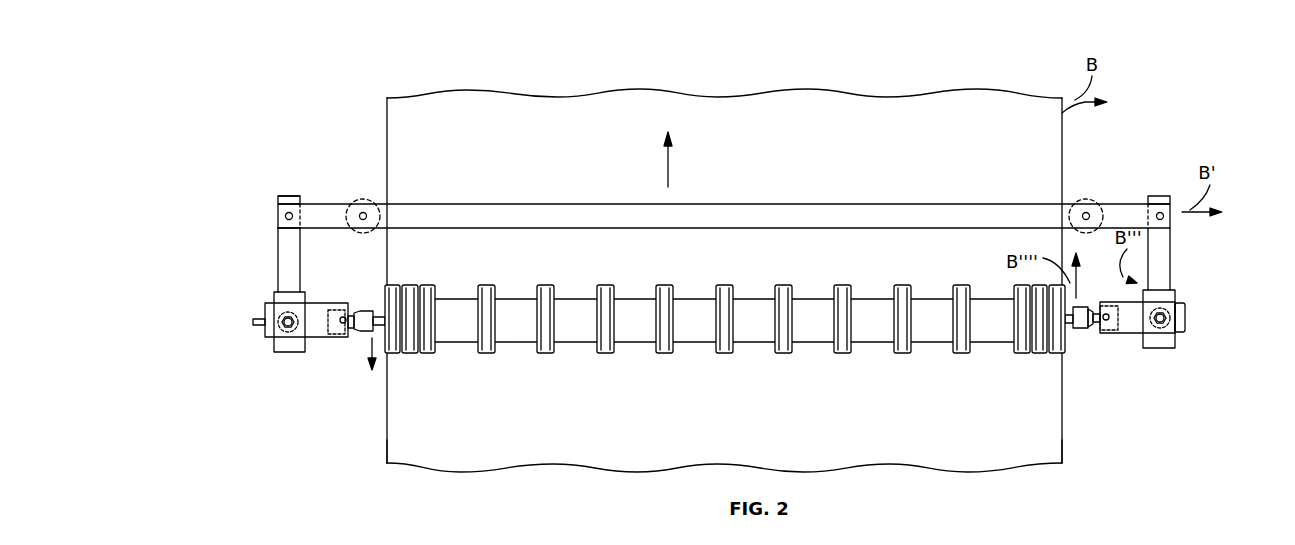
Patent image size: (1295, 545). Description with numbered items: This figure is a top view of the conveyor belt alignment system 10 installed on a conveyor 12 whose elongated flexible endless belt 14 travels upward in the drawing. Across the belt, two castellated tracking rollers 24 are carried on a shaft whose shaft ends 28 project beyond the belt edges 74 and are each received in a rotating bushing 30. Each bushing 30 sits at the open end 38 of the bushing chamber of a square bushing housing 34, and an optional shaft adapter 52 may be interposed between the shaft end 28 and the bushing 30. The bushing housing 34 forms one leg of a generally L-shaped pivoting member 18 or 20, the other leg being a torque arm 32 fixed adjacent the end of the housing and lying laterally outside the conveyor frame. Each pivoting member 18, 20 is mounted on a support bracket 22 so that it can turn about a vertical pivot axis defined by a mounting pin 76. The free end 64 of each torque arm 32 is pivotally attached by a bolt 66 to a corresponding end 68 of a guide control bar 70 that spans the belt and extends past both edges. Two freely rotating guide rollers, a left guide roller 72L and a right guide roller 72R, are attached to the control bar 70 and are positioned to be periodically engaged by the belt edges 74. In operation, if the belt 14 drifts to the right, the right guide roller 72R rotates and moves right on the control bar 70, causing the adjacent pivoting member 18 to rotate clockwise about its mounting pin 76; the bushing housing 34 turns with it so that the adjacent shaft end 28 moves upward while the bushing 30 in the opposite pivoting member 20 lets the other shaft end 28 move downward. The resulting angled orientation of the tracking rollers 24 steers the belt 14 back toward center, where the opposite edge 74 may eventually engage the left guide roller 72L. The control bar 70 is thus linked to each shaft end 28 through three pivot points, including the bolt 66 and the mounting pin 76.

The conveyor belt alignment system 10 is at (1222, 194).
The conveyor 12 is at (360, 94).
The conveyor belt 14 is at (1047, 408).
The pivoting member 18 is at (1187, 310).
The pivoting member 20 is at (322, 339).
The support bracket 22 is at (288, 353).
The castellated tracking roller 24 is at (843, 355).
The shaft end 28 is at (1068, 326).
The rotating bushing 30 is at (337, 307).
The torque arm 32 is at (278, 258).
The bushing housing 34 is at (327, 339).
The open end 38 is at (327, 338).
The shaft adapter 52 is at (350, 312).
The free end 64 is at (291, 197).
The bolt 66 is at (284, 214).
The end of guide control bar 68 is at (278, 226).
The guide control bar 70 is at (470, 214).
The left guide roller 72L is at (362, 200).
The right guide roller 72R is at (1088, 199).
The belt edge 74 is at (387, 445).
The mounting pin 76 is at (270, 322).